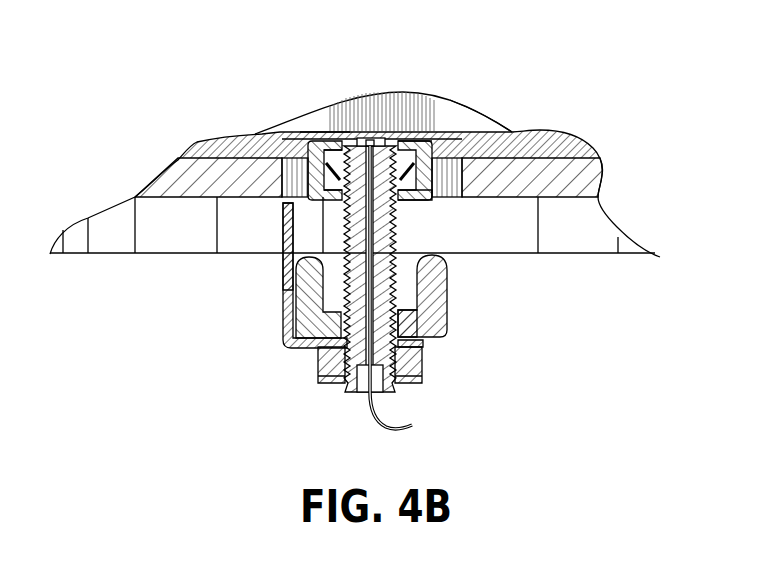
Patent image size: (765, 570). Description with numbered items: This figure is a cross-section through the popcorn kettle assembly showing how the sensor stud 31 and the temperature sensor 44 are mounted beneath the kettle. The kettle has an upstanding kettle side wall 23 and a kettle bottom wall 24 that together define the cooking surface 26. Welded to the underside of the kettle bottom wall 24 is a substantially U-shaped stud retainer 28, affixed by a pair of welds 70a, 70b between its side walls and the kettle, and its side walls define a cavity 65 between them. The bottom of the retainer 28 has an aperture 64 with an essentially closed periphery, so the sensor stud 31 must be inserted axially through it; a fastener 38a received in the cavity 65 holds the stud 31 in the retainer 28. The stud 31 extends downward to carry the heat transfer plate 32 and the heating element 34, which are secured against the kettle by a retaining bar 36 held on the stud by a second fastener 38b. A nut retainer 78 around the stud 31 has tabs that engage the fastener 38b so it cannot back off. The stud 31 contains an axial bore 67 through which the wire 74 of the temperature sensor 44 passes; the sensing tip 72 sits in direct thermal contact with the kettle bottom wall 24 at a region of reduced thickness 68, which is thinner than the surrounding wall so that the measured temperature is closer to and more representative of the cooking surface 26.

The kettle side wall 23 is at (470, 122).
The kettle bottom wall 24 is at (545, 131).
The cooking surface 26 is at (461, 120).
The stud retainer 28 is at (400, 204).
The sensor stud 31 is at (283, 233).
The heat transfer plate 32 is at (558, 178).
The heating element 34 is at (588, 226).
The retaining bar 36 is at (448, 300).
The fastener 38a is at (320, 178).
The fastener 38b is at (423, 372).
The temperature sensor 44 is at (362, 139).
The aperture 64 is at (401, 208).
The cavity 65 is at (416, 140).
The bore 67 is at (427, 333).
The region of reduced thickness 68 is at (327, 132).
The weld 70a is at (312, 167).
The weld 70b is at (438, 140).
The sensing tip 72 is at (378, 139).
The wire 74 is at (387, 412).
The nut retainer 78 is at (283, 328).